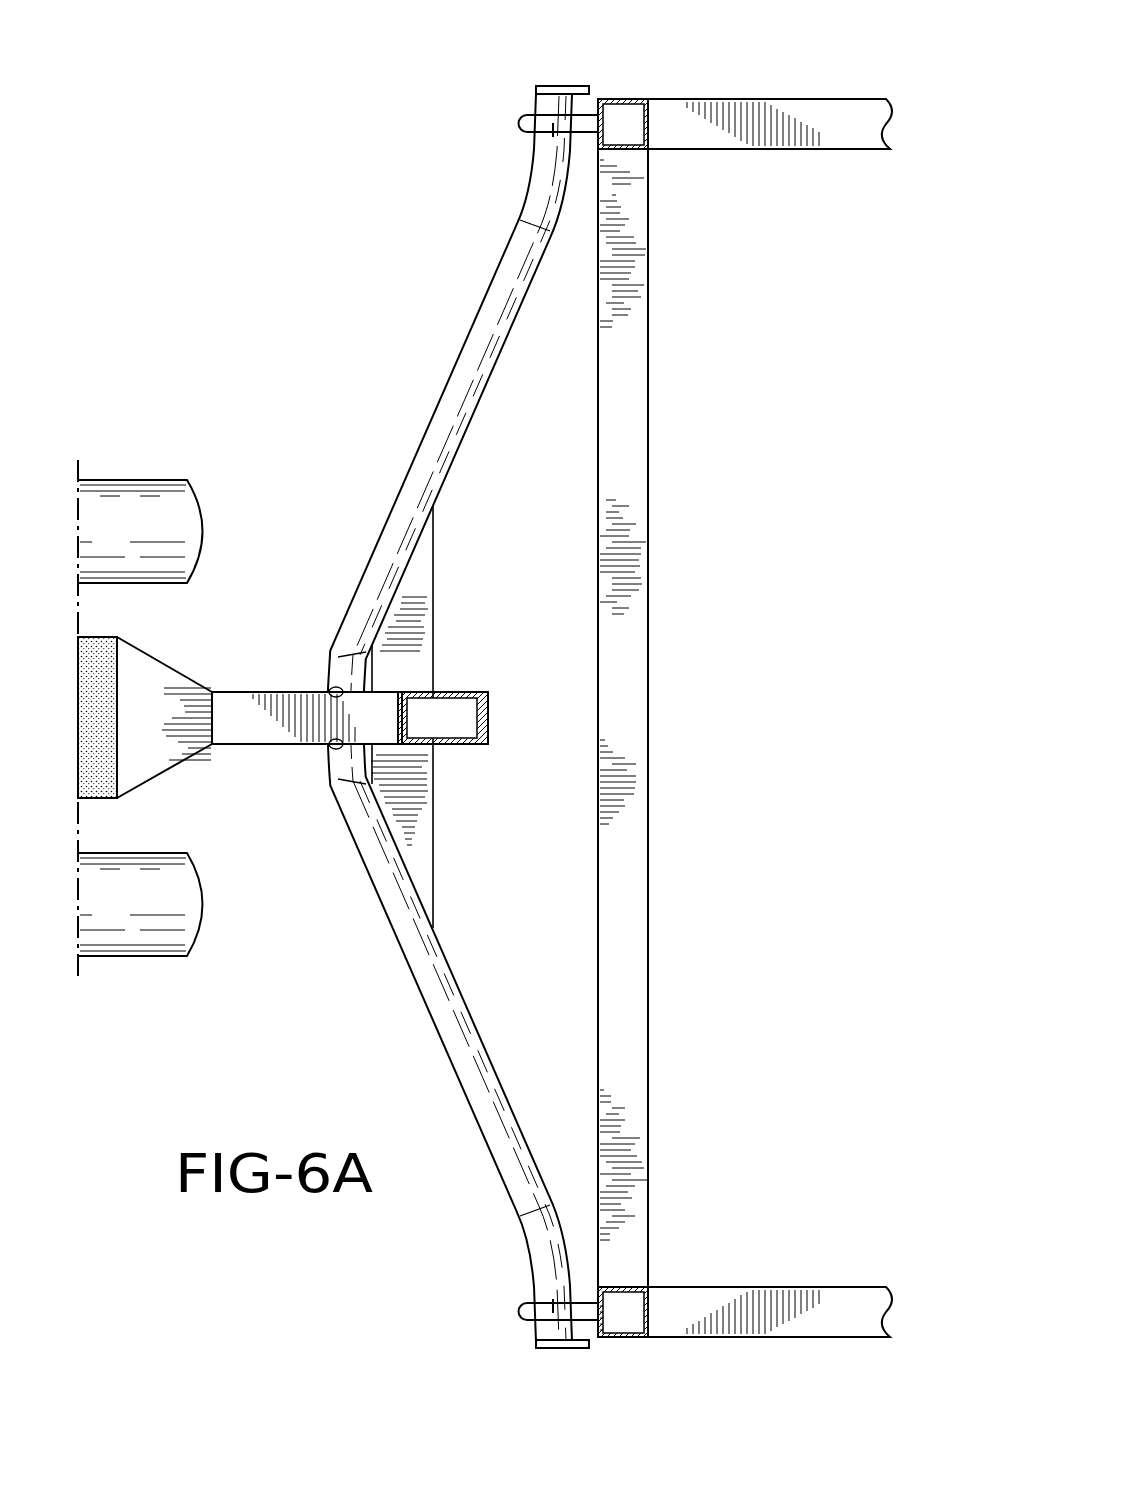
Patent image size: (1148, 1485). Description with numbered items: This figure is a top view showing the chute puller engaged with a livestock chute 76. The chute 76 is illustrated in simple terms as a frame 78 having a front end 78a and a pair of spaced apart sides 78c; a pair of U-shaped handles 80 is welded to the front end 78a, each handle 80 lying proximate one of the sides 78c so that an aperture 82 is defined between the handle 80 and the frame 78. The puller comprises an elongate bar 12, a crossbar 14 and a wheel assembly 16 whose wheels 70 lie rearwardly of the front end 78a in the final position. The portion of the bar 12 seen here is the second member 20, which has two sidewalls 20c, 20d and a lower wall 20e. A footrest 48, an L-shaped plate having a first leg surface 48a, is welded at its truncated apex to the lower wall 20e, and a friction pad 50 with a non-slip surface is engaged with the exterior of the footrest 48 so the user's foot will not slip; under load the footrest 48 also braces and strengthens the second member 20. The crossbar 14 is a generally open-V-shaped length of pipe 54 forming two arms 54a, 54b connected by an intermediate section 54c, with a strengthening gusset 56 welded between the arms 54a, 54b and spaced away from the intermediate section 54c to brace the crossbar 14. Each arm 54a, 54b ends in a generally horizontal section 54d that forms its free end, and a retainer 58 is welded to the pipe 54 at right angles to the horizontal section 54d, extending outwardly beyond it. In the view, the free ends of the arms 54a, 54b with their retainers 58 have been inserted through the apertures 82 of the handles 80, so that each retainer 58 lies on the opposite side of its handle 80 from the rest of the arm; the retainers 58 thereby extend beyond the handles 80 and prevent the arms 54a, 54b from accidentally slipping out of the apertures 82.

The elongate bar 12 is at (278, 762).
The crossbar 14 is at (448, 807).
The wheel assembly 16 is at (130, 458).
The second member 20 is at (243, 684).
The sidewall 20c is at (462, 746).
The sidewall 20d is at (453, 692).
The lower wall 20e is at (242, 732).
The footrest 48 is at (148, 781).
The first leg surface 48a is at (158, 682).
The friction pad 50 is at (95, 790).
The pipe 54 is at (458, 341).
The arm 54a is at (450, 1025).
The arm 54b is at (457, 400).
The intermediate section 54c is at (333, 672).
The horizontal section 54d is at (573, 140).
The strengthening gusset 56 is at (420, 857).
The retainer 58 is at (580, 86).
The wheels 70 is at (183, 520).
The livestock chute 76 is at (790, 80).
The frame 78 is at (836, 96).
The front end 78a is at (594, 583).
The sides 78c is at (827, 155).
The U-shaped handle 80 is at (518, 123).
The aperture 82 is at (548, 147).